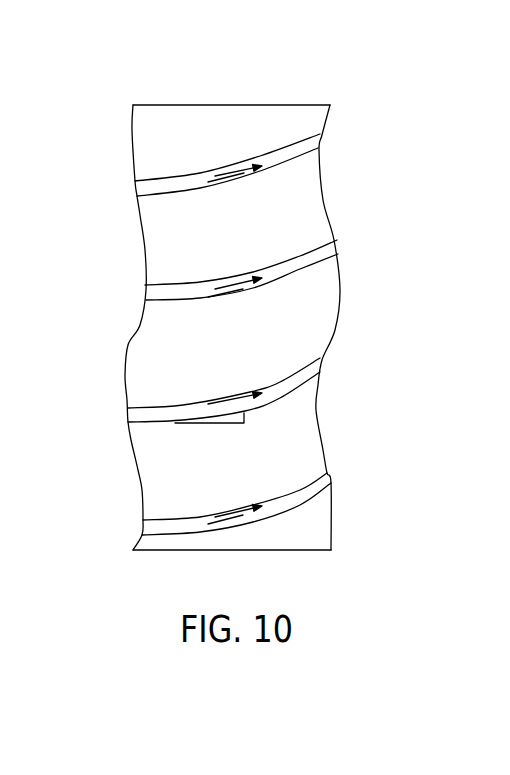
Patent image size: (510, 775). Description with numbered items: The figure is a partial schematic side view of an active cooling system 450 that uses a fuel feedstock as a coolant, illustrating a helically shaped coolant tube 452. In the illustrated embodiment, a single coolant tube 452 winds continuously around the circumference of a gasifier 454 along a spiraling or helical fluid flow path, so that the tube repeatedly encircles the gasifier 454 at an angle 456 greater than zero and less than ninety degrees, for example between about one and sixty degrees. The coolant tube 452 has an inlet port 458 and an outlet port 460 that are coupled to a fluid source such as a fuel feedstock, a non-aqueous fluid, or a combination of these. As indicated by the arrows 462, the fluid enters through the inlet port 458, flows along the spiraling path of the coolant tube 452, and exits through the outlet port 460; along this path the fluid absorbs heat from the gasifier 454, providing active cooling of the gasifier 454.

The active cooling system 450 is at (331, 62).
The coolant tube 452 is at (134, 398).
The gasifier 454 is at (220, 113).
The angle 456 is at (248, 414).
The inlet port 458 is at (329, 482).
The outlet port 460 is at (320, 140).
The arrows 462 is at (230, 178).